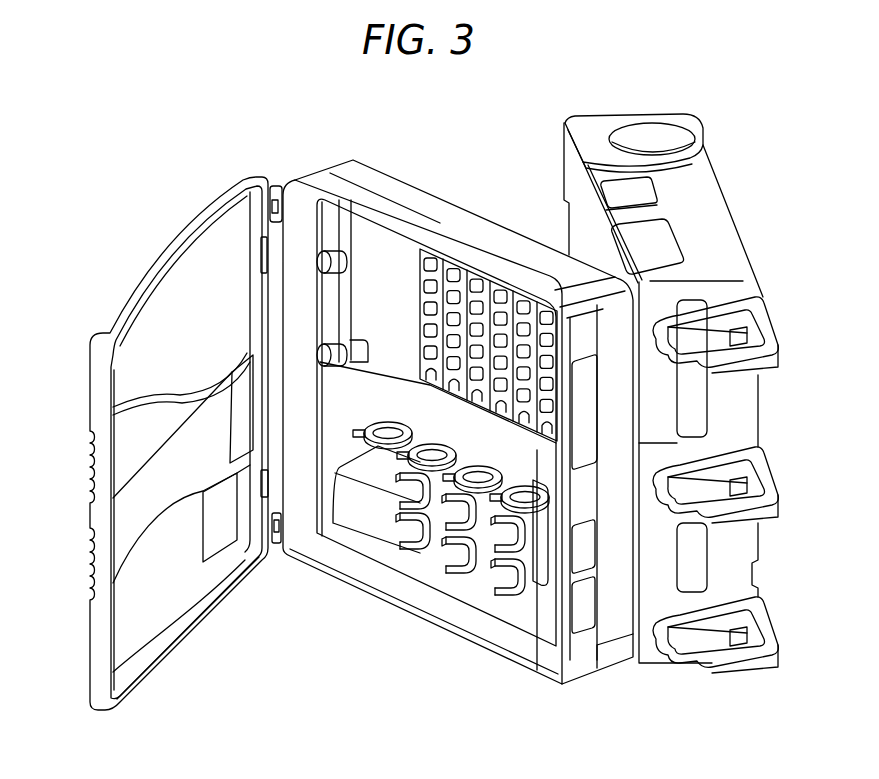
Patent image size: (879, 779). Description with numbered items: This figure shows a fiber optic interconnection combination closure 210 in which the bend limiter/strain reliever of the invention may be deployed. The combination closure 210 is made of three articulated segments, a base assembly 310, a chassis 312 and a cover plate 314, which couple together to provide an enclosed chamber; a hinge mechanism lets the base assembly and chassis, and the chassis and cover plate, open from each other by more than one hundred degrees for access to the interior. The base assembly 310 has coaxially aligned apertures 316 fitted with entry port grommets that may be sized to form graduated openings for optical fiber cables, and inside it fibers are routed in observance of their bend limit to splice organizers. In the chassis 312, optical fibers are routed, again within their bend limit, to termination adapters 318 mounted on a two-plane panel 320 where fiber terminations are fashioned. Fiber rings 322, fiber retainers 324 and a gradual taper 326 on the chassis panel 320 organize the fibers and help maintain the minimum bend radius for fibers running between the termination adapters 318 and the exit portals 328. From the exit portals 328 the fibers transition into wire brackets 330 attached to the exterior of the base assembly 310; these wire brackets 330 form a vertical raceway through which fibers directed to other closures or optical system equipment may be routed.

The combination closure 210 is at (185, 130).
The base assembly 310 is at (717, 178).
The chassis 312 is at (356, 158).
The cover plate 314 is at (96, 331).
The coaxially aligned apertures 316 is at (653, 136).
The termination adapters 318 is at (433, 257).
The two-plane panel 320 is at (373, 296).
The fiber rings 322 is at (358, 440).
The fiber retainers 324 is at (417, 550).
The gradual taper 326 is at (547, 580).
The exit portals 328 is at (571, 607).
The wire brackets 330 is at (773, 326).